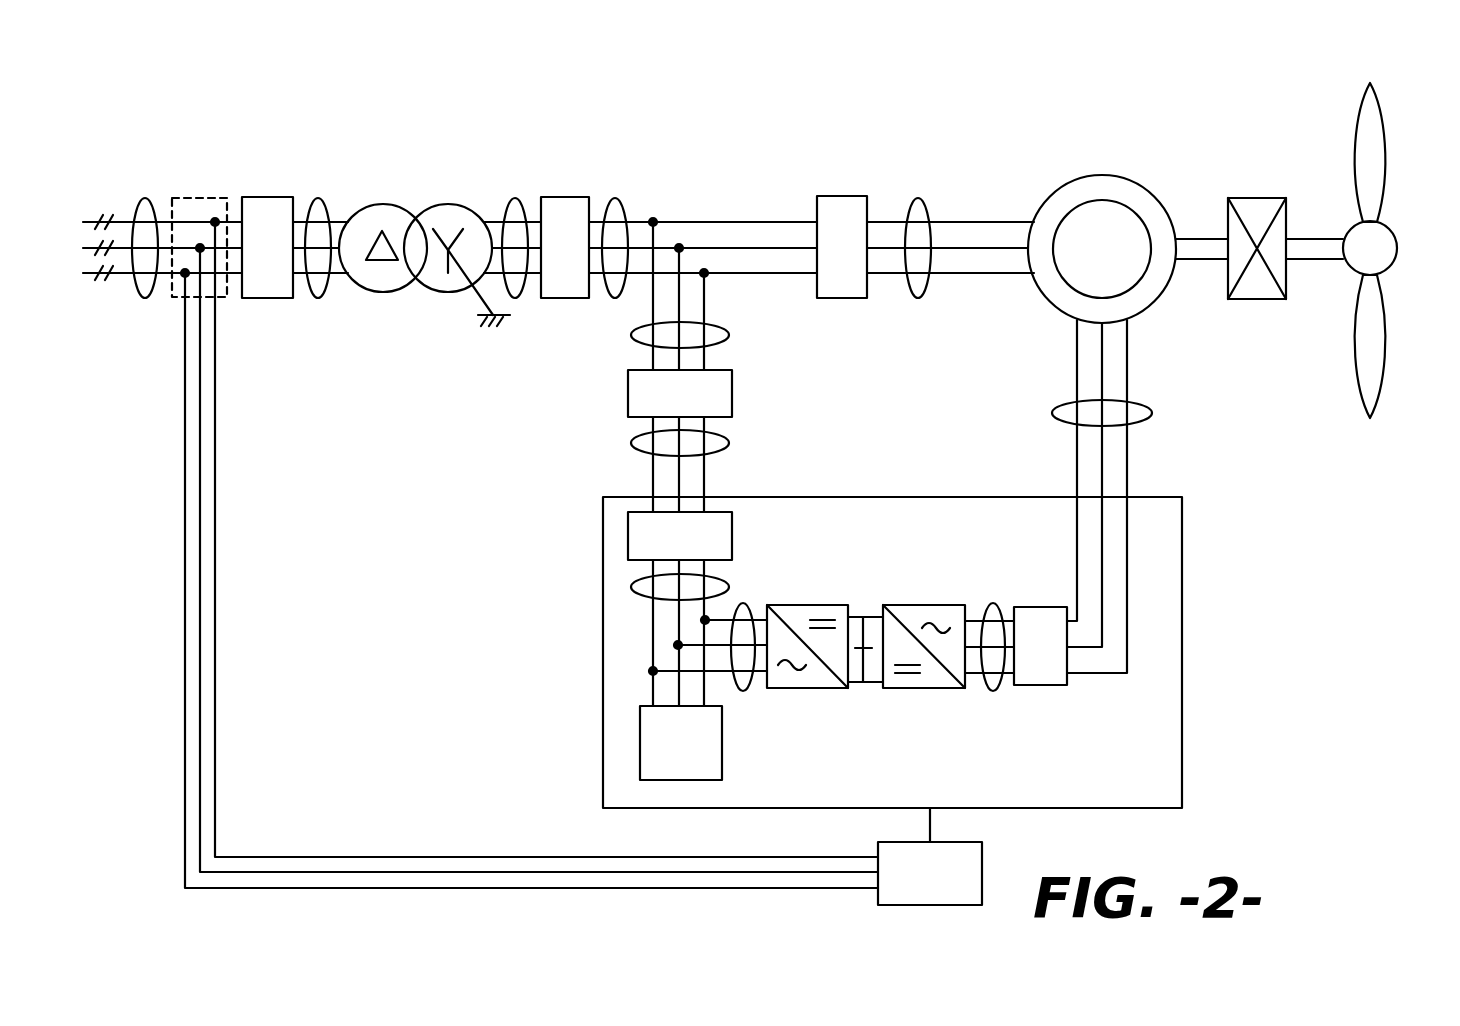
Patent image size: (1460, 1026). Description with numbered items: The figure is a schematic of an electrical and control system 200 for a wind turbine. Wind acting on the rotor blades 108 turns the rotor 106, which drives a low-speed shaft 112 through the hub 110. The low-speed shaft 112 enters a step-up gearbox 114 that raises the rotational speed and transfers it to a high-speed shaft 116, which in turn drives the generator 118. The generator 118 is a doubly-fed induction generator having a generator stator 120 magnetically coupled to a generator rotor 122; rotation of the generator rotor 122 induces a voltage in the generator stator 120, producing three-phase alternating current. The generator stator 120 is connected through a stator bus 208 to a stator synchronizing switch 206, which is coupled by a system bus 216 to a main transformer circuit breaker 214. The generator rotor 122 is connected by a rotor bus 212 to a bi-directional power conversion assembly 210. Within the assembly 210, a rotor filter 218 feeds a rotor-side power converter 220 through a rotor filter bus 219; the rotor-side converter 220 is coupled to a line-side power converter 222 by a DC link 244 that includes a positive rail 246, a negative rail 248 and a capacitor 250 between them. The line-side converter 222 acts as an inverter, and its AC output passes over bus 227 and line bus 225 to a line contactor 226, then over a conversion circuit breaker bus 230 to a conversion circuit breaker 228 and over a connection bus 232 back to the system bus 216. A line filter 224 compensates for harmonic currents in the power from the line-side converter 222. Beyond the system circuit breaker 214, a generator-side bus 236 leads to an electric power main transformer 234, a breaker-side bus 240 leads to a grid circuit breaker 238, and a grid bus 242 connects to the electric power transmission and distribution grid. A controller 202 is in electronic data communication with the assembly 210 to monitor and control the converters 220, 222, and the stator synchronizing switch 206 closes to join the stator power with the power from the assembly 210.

The rotor 106 is at (1367, 230).
The rotor blades 108 is at (1383, 150).
The hub 110 is at (1397, 243).
The low-speed shaft 112 is at (1300, 238).
The step-up gearbox 114 is at (1258, 198).
The high-speed shaft 116 is at (1217, 238).
The generator 118 is at (1109, 200).
The generator stator 120 is at (1127, 174).
The generator rotor 122 is at (1063, 215).
The electrical and control system 200 is at (226, 86).
The controller 202 is at (954, 887).
The stator synchronizing switch 206 is at (846, 196).
The stator bus 208 is at (920, 198).
The bi-directional power conversion assembly 210 is at (1182, 605).
The rotor bus 212 is at (1152, 413).
The main transformer circuit breaker 214 is at (565, 197).
The system bus 216 is at (615, 198).
The rotor filter 218 is at (1030, 607).
The rotor filter bus 219 is at (990, 605).
The rotor-side bi-directional power converter 220 is at (965, 682).
The line-side bi-directional power converter 222 is at (765, 680).
The line filter 224 is at (640, 752).
The line bus 225 is at (632, 590).
The line contactor 226 is at (628, 540).
The bus 227 is at (740, 605).
The conversion circuit breaker 228 is at (732, 392).
The conversion circuit breaker bus 230 is at (732, 443).
The connection bus 232 is at (730, 336).
The electric power main transformer 234 is at (443, 205).
The generator-side bus 236 is at (512, 198).
The grid circuit breaker 238 is at (268, 197).
The breaker-side bus 240 is at (322, 197).
The grid bus 242 is at (147, 197).
The DC link 244 is at (858, 635).
The positive rail 246 is at (868, 615).
The negative rail 248 is at (867, 682).
The capacitor 250 is at (863, 646).